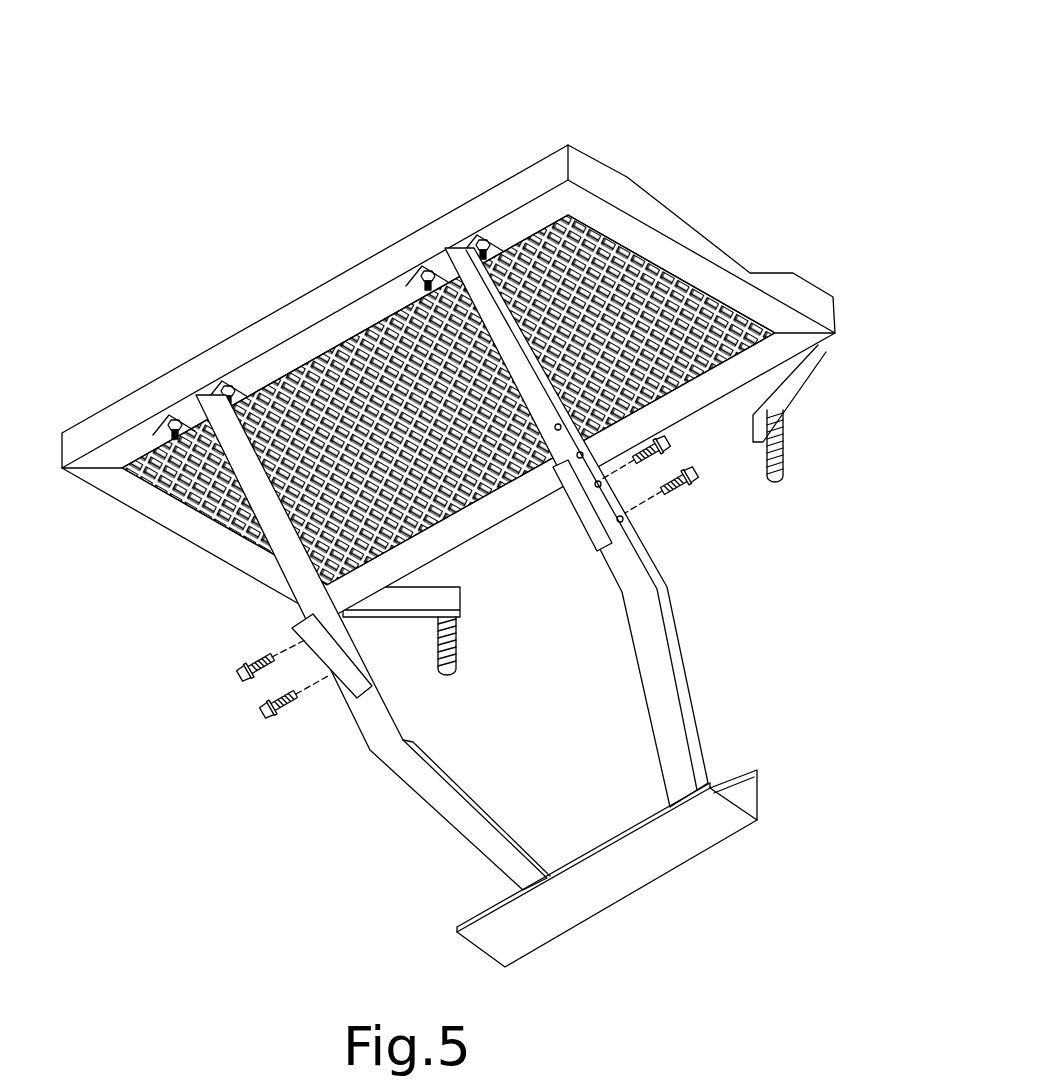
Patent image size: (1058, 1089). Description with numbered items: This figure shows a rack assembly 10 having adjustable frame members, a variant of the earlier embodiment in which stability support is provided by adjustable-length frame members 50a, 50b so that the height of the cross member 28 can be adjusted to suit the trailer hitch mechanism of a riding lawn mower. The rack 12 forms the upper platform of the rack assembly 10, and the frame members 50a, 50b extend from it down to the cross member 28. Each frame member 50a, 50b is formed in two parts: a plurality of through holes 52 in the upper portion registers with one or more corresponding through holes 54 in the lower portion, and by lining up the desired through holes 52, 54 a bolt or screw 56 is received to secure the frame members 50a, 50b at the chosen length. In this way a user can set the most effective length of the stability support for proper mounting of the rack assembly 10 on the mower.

The rack assembly 10 is at (455, 526).
The rack 12 is at (347, 292).
The cross member 28 is at (636, 865).
The frame member 50a is at (362, 784).
The frame member 50b is at (700, 624).
The through holes 52 is at (580, 458).
The through holes 54 is at (614, 538).
The bolt or screw 56 is at (672, 452).